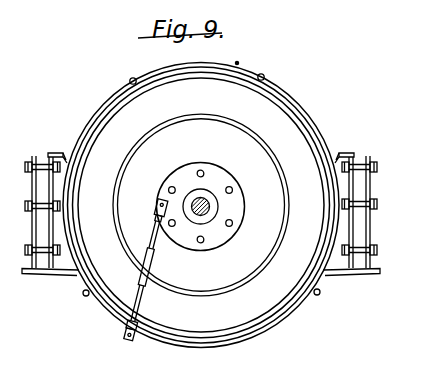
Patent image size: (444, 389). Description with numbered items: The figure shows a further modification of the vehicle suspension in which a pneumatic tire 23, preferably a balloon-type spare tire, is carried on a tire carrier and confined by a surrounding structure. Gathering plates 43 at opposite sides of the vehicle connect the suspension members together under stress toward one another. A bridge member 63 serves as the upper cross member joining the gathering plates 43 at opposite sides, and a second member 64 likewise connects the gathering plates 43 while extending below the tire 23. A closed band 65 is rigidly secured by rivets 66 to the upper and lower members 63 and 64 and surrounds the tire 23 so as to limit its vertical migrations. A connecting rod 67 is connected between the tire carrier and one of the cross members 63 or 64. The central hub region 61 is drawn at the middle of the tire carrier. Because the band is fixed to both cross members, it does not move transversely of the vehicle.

The pneumatic tire 23 is at (300, 140).
The gathering plates 43 is at (350, 228).
The hub 61 is at (282, 208).
The bridge member 63 is at (283, 89).
The second member 64 is at (280, 323).
The closed band 65 is at (324, 267).
The rivets 66 is at (262, 78).
The connecting rod 67 is at (153, 268).